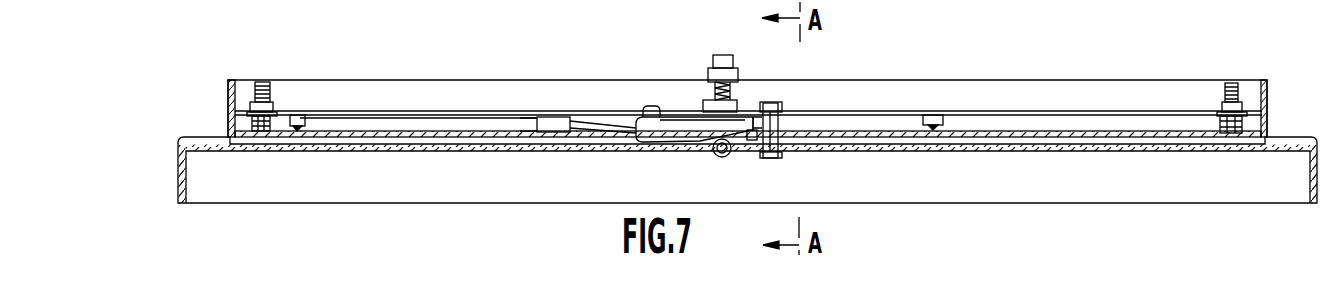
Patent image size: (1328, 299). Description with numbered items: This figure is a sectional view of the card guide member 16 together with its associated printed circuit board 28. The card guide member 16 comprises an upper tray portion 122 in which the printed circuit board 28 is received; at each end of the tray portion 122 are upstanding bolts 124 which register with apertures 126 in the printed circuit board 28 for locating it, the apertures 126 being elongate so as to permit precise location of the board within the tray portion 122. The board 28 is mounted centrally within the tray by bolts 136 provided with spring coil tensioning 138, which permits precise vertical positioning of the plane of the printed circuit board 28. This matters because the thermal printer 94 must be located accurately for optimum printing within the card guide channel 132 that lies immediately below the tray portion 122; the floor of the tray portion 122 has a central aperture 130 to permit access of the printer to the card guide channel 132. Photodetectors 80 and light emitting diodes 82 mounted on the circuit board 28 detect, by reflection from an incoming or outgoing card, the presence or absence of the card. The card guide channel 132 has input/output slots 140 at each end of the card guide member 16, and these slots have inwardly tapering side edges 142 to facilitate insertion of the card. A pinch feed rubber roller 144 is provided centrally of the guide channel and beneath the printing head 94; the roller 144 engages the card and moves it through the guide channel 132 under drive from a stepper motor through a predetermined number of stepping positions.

The card guide member 16 is at (229, 87).
The printed circuit board 28 is at (1035, 110).
The photodetectors 80 is at (643, 76).
The light emitting diodes 82 is at (298, 118).
The thermal printer 94 is at (660, 127).
The upper tray portion 122 is at (505, 95).
The upstanding bolts 124 is at (265, 86).
The apertures 126 is at (270, 114).
The central aperture 130 is at (610, 118).
The card guide channel 132 is at (447, 142).
The bolts 136 is at (706, 72).
The spring coil tensioning 138 is at (737, 84).
The input/output slots 140 is at (235, 143).
The inwardly tapering side edges 142 is at (199, 140).
The pinch feed rubber roller 144 is at (718, 155).